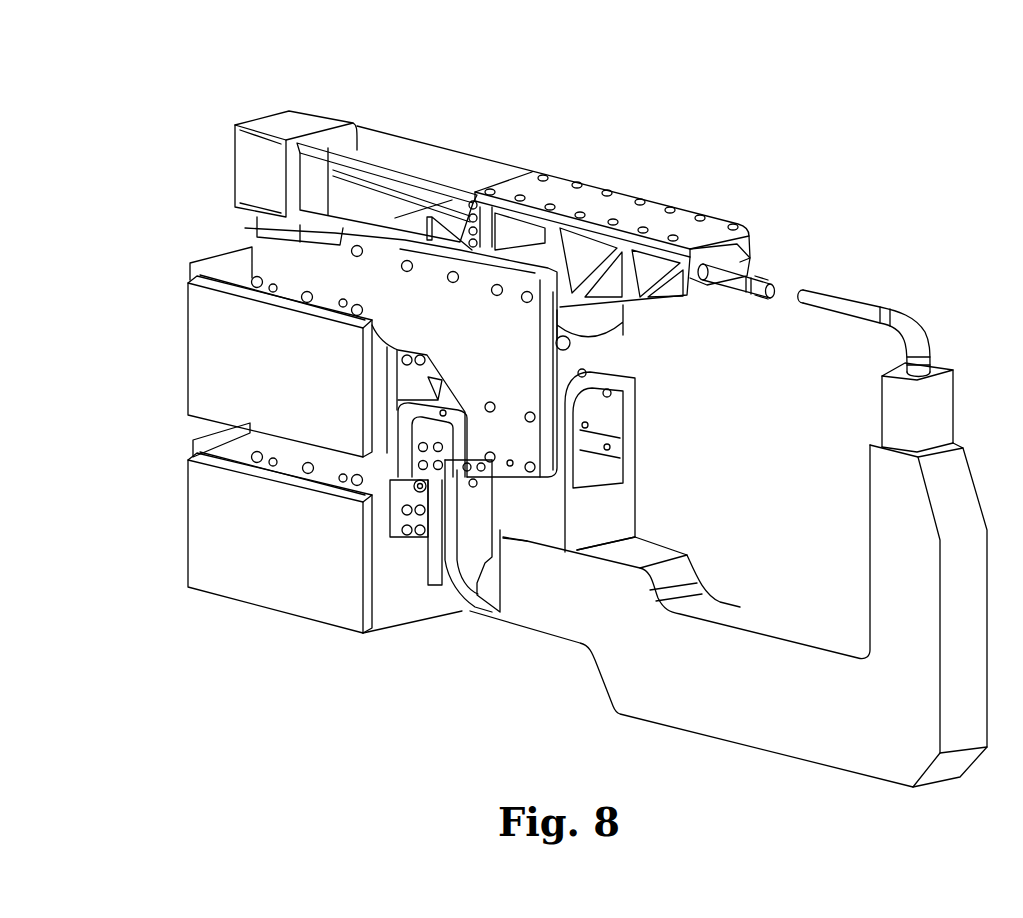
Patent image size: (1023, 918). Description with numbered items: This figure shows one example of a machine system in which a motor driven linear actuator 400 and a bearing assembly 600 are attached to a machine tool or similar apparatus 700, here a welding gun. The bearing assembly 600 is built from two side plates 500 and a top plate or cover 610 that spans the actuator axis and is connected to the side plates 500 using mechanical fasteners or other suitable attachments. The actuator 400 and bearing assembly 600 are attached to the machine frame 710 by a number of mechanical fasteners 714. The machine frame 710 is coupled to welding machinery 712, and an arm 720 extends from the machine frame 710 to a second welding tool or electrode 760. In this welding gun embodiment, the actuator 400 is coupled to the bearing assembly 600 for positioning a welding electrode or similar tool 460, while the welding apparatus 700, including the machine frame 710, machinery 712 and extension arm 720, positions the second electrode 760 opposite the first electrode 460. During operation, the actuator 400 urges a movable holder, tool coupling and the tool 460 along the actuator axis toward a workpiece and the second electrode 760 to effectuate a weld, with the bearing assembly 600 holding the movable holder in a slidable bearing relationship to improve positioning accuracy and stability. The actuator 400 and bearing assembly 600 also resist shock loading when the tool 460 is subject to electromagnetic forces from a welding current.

The motor driven linear actuator 400 is at (415, 120).
The tool 460 is at (762, 312).
The side plates 500 is at (750, 247).
The bearing assembly 600 is at (633, 103).
The top plate 610 is at (620, 207).
The welding apparatus 700 is at (940, 200).
The machine frame 710 is at (270, 248).
The welding machinery 712 is at (247, 573).
The mechanical fasteners 714 is at (360, 248).
The arm 720 is at (752, 725).
The second welding tool 760 is at (873, 293).